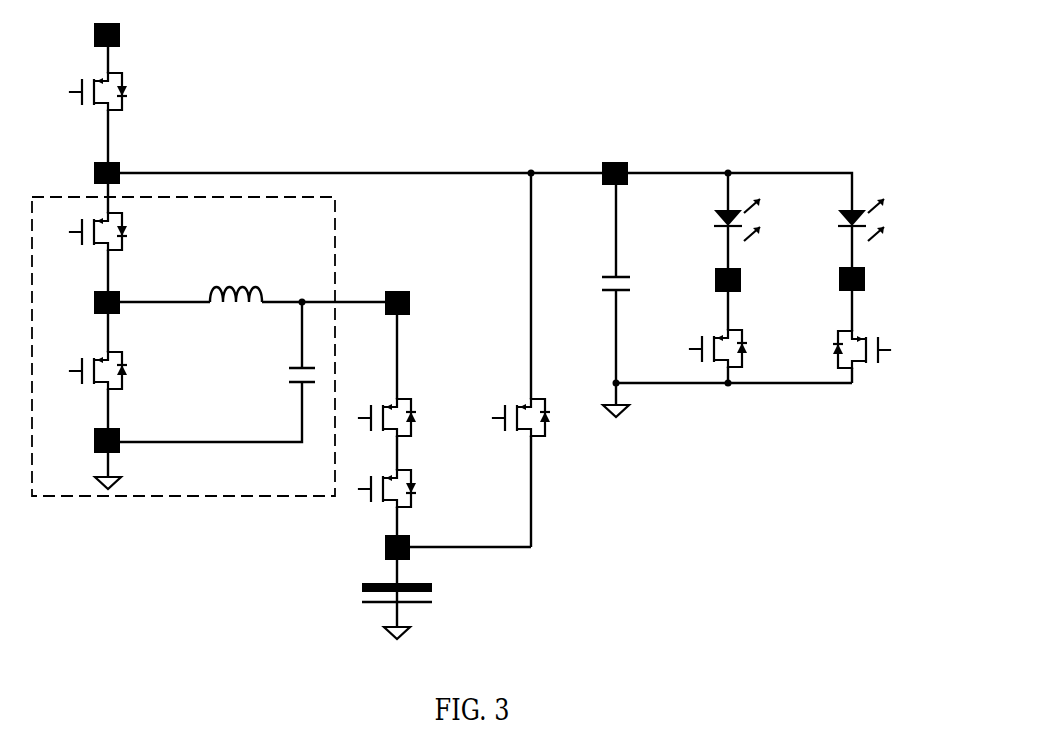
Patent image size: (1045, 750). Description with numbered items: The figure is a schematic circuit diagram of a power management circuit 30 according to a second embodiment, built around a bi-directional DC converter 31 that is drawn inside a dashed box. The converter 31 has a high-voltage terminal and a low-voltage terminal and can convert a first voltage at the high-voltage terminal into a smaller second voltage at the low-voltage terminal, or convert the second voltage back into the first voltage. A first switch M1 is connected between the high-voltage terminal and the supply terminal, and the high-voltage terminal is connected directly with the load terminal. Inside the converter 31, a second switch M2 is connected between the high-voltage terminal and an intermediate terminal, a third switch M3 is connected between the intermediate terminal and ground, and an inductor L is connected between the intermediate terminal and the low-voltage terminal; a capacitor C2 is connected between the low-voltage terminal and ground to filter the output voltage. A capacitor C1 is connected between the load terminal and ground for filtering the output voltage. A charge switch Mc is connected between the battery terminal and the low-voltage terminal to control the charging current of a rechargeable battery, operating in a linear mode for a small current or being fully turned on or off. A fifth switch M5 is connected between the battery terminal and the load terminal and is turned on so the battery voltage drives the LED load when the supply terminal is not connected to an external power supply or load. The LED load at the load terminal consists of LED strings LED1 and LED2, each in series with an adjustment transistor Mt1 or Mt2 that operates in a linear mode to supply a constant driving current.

The power management circuit 30 is at (838, 76).
The bi-directional DC converter 31 is at (61, 497).
The first switch M1 is at (124, 91).
The second switch M2 is at (124, 231).
The third switch M3 is at (125, 370).
The inductor L is at (236, 280).
The capacitor C2 is at (217, 372).
The charge switch Mc is at (410, 453).
The fifth switch M5 is at (537, 393).
The capacitor C1 is at (645, 295).
The LED string LED1 is at (767, 247).
The LED string LED2 is at (892, 246).
The adjustment transistor Mt1 is at (751, 348).
The adjustment transistor Mt2 is at (892, 349).